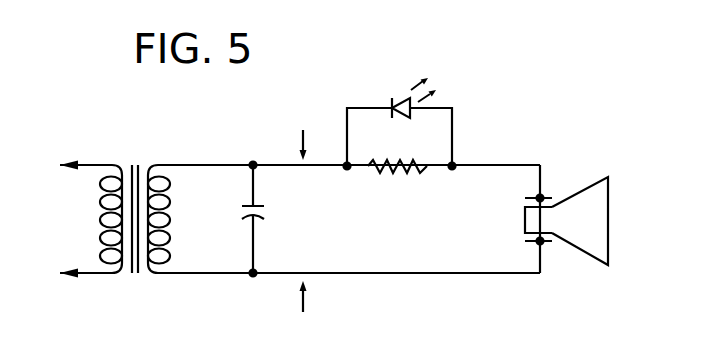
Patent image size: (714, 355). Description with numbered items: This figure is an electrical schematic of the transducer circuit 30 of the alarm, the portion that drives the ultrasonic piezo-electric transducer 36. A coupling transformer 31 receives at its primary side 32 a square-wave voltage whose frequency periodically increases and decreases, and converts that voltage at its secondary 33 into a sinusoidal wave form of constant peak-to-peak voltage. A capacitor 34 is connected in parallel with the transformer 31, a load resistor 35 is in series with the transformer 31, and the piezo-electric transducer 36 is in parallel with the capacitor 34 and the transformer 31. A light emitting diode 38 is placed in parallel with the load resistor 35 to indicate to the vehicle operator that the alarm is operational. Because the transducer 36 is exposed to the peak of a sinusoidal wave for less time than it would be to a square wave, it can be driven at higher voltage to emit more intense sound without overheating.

The transducer circuit 30 is at (507, 110).
The coupling transformer 31 is at (142, 160).
The primary side 32 is at (77, 155).
The secondary 33 is at (185, 165).
The capacitor 34 is at (265, 210).
The load resistor 35 is at (409, 172).
The ultrasonic piezo-electric transducer 36 is at (582, 187).
The light emitting diode 38 is at (407, 97).